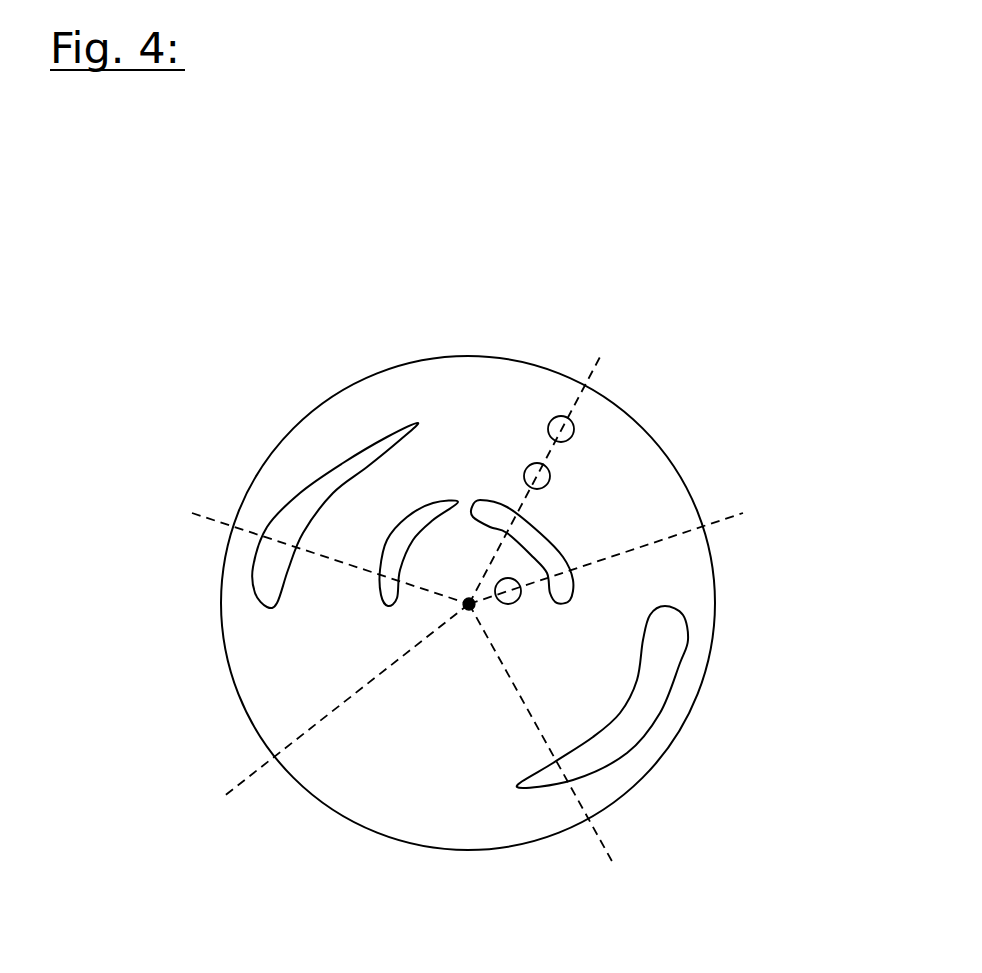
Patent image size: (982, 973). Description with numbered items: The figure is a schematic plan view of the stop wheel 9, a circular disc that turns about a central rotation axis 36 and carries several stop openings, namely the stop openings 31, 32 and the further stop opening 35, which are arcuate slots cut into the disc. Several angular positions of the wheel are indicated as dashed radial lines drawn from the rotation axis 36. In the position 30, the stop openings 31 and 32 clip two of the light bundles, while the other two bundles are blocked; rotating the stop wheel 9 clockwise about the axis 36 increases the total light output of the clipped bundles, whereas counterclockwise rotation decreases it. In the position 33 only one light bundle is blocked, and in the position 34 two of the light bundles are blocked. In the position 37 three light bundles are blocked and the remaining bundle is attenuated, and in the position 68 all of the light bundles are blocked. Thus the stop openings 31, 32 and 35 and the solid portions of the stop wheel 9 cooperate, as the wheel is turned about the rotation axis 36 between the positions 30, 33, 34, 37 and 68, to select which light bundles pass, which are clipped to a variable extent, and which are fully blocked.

The stop wheel 9 is at (428, 385).
The position 30 is at (205, 512).
The stop opening 31 is at (260, 578).
The stop opening 32 is at (390, 590).
The position 33 is at (600, 368).
The position 34 is at (717, 527).
The stop opening 35 is at (667, 655).
The rotation axis 36 is at (463, 610).
The position 37 is at (603, 835).
The position 68 is at (237, 788).